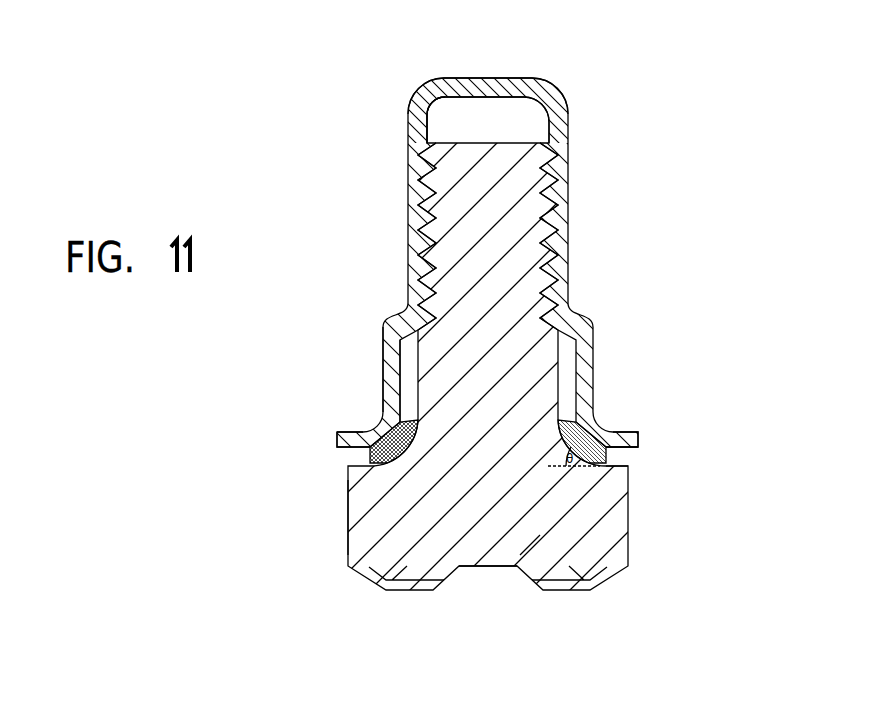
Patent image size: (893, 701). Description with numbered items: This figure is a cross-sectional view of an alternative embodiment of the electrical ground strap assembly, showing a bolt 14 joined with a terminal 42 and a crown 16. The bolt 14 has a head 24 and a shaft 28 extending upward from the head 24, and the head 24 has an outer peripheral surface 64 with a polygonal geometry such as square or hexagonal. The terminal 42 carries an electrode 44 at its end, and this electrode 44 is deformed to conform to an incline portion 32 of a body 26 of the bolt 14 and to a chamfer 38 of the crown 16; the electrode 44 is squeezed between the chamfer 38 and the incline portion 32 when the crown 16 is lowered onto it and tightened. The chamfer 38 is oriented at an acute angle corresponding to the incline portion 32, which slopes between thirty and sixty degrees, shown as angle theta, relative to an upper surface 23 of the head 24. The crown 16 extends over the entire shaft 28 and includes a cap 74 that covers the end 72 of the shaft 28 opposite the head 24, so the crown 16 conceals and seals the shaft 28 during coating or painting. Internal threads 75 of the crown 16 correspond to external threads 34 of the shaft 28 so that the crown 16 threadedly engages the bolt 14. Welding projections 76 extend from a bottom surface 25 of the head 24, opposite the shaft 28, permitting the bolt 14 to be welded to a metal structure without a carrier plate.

The bolt 14 is at (643, 508).
The crown 16 is at (572, 74).
The upper surface 23 is at (625, 470).
The head 24 is at (537, 553).
The bottom surface 25 is at (482, 567).
The body 26 is at (374, 463).
The shaft 28 is at (536, 207).
The incline portion 32 is at (598, 428).
The external threads 34 is at (410, 300).
The chamfer 38 is at (595, 430).
The terminal 42 is at (615, 458).
The electrode 44 is at (340, 457).
The outer peripheral surface 64 is at (348, 517).
The end 72 is at (503, 142).
The cap 74 is at (428, 92).
The internal threads 75 is at (428, 140).
The welding projections 76 is at (405, 592).